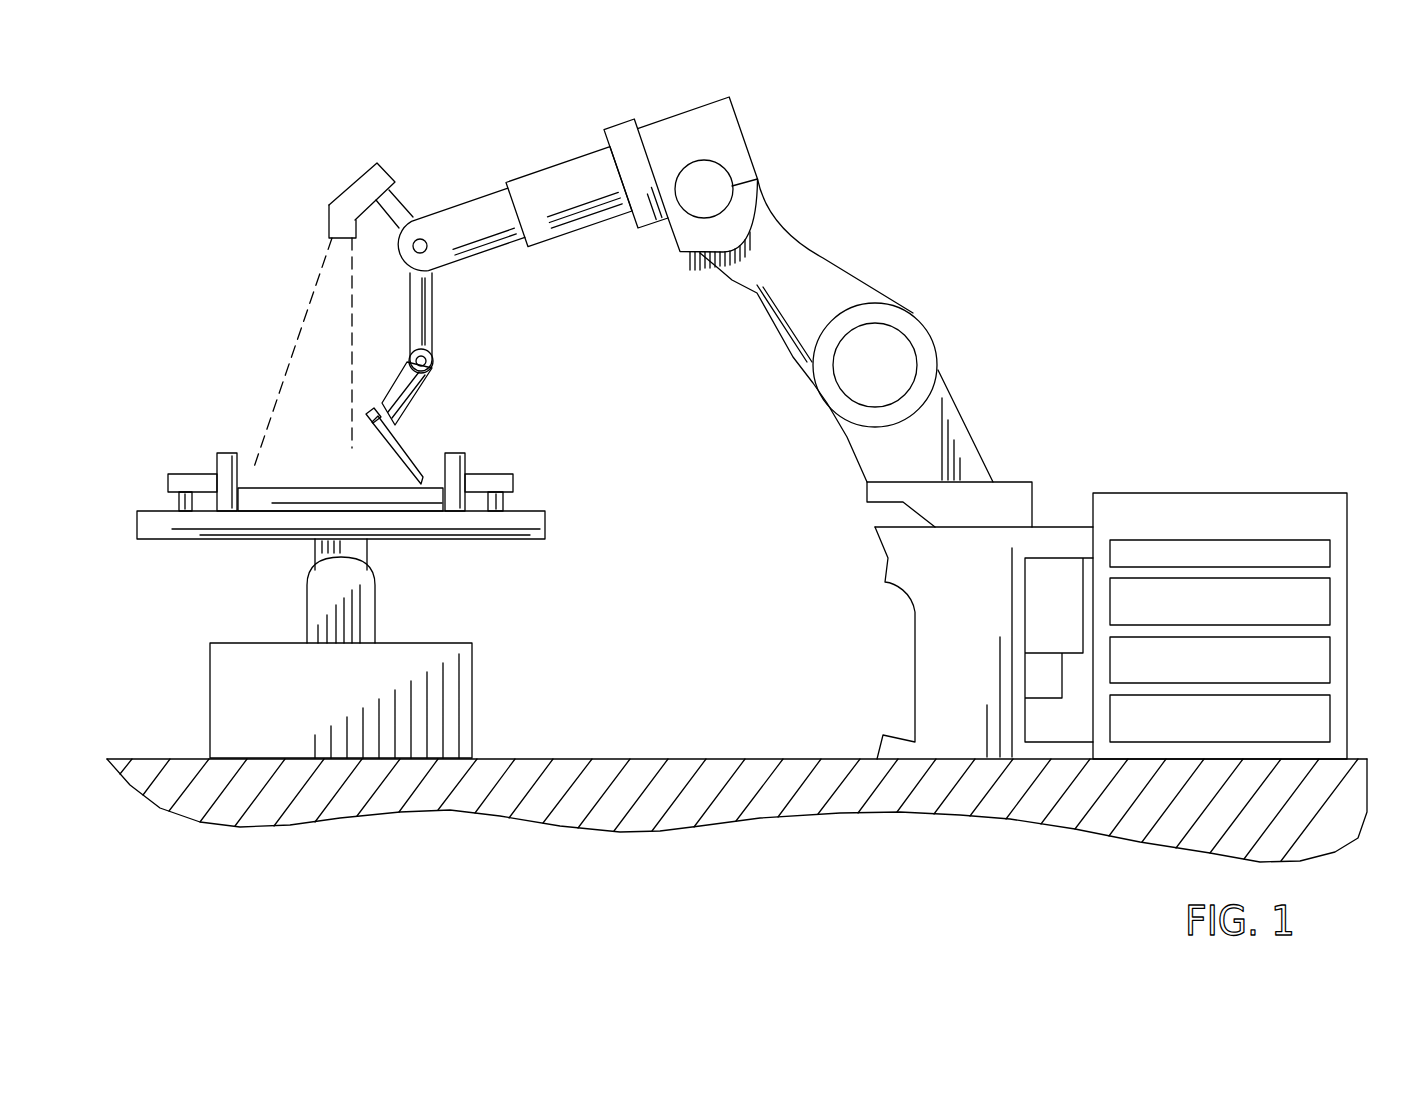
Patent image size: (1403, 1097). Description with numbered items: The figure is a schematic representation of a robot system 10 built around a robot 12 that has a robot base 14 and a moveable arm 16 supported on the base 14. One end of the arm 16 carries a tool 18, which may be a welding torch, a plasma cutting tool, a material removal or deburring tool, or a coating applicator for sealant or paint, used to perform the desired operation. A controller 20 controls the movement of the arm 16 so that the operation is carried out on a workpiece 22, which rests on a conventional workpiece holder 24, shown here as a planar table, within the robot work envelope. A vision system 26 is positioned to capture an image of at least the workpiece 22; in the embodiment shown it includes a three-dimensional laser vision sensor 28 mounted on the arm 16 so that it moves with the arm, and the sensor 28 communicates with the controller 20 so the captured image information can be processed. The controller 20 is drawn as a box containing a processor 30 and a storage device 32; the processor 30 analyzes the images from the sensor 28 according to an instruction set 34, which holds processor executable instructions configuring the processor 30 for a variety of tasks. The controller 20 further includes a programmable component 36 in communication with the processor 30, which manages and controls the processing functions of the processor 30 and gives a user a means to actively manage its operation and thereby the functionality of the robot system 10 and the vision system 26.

The robot system 10 is at (230, 288).
The robot 12 is at (966, 352).
The robot base 14 is at (913, 662).
The moveable arm 16 is at (827, 258).
The tool 18 is at (400, 452).
The controller 20 is at (1093, 493).
The workpiece 22 is at (422, 497).
The workpiece holder 24 is at (148, 500).
The vision system 26 is at (390, 168).
The vision sensor 28 is at (334, 203).
The processor 30 is at (1330, 541).
The storage device 32 is at (1330, 579).
The instruction set 34 is at (1330, 638).
The programmable component 36 is at (1330, 696).